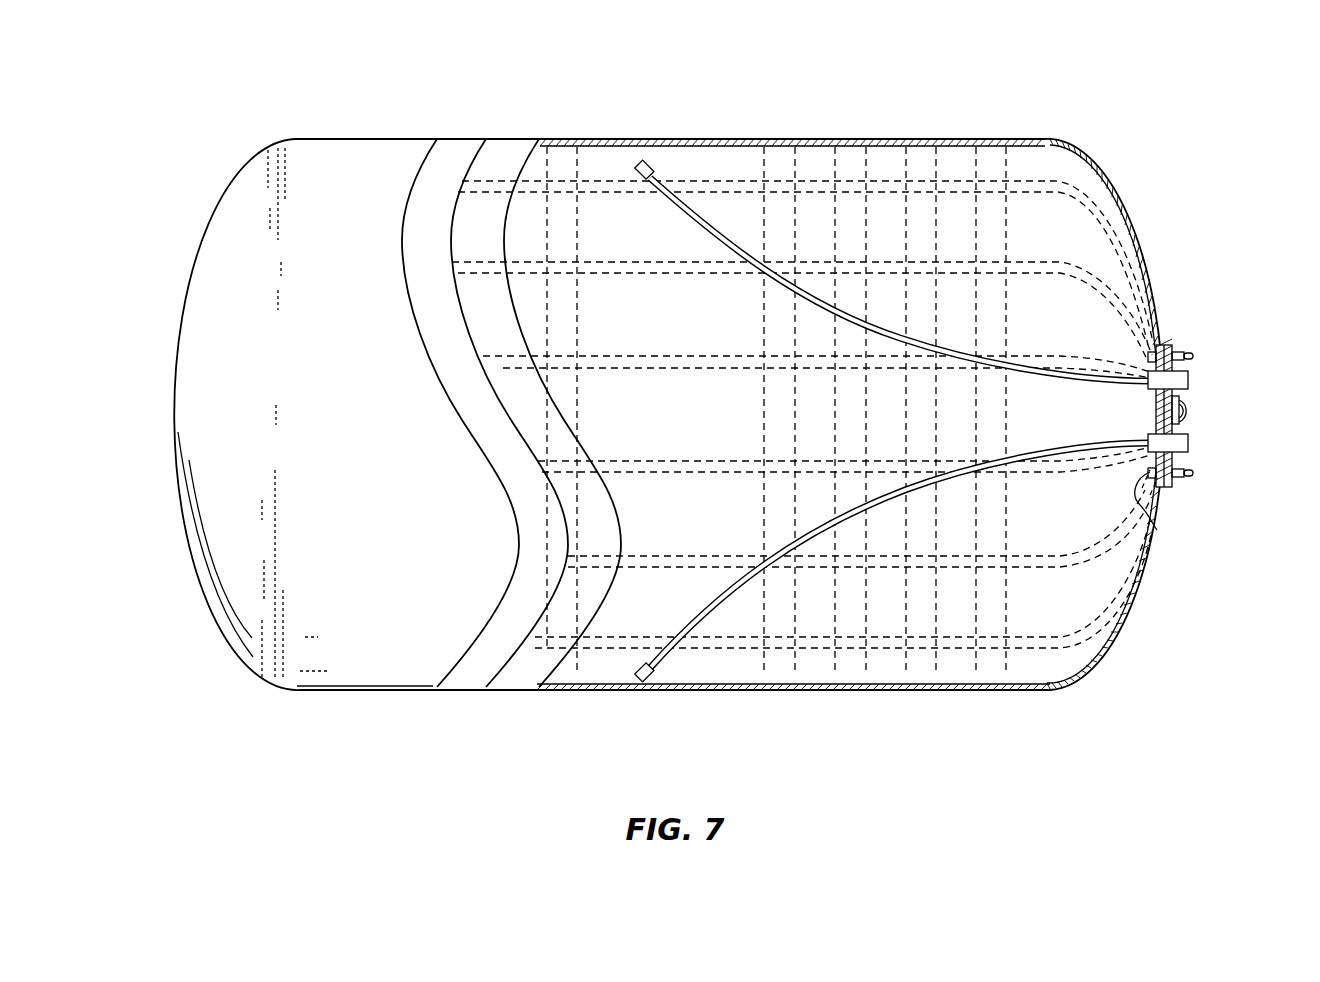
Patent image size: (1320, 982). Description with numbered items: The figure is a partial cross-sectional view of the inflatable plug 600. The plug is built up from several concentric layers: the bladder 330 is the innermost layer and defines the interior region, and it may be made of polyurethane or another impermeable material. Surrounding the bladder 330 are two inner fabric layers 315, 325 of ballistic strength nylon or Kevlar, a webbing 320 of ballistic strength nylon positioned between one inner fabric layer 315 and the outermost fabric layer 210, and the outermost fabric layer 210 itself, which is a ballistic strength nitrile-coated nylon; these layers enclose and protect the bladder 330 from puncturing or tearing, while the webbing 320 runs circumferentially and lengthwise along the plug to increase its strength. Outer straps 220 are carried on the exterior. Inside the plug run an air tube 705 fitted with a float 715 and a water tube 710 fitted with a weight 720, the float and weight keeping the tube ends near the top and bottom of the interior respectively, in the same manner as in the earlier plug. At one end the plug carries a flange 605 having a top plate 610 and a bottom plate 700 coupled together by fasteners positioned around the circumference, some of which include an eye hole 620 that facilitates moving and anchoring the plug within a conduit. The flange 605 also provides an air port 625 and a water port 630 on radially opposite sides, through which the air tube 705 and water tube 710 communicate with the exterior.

The inflatable plug 600 is at (178, 112).
The outermost fabric layer 210 is at (1062, 167).
The outer straps 220 is at (920, 150).
The bladder 330 is at (230, 618).
The inner fabric layer 325 is at (470, 680).
The inner fabric layer 315 is at (516, 682).
The webbing 320 is at (555, 655).
The air tube 705 is at (716, 232).
The water tube 710 is at (717, 603).
The float 715 is at (641, 166).
The weight 720 is at (632, 690).
The flange 605 is at (1214, 429).
The air port 625 is at (1203, 384).
The eye hole 620 is at (1200, 410).
The water port 630 is at (1195, 446).
The top plate 610 is at (1188, 470).
The bottom plate 700 is at (1140, 500).